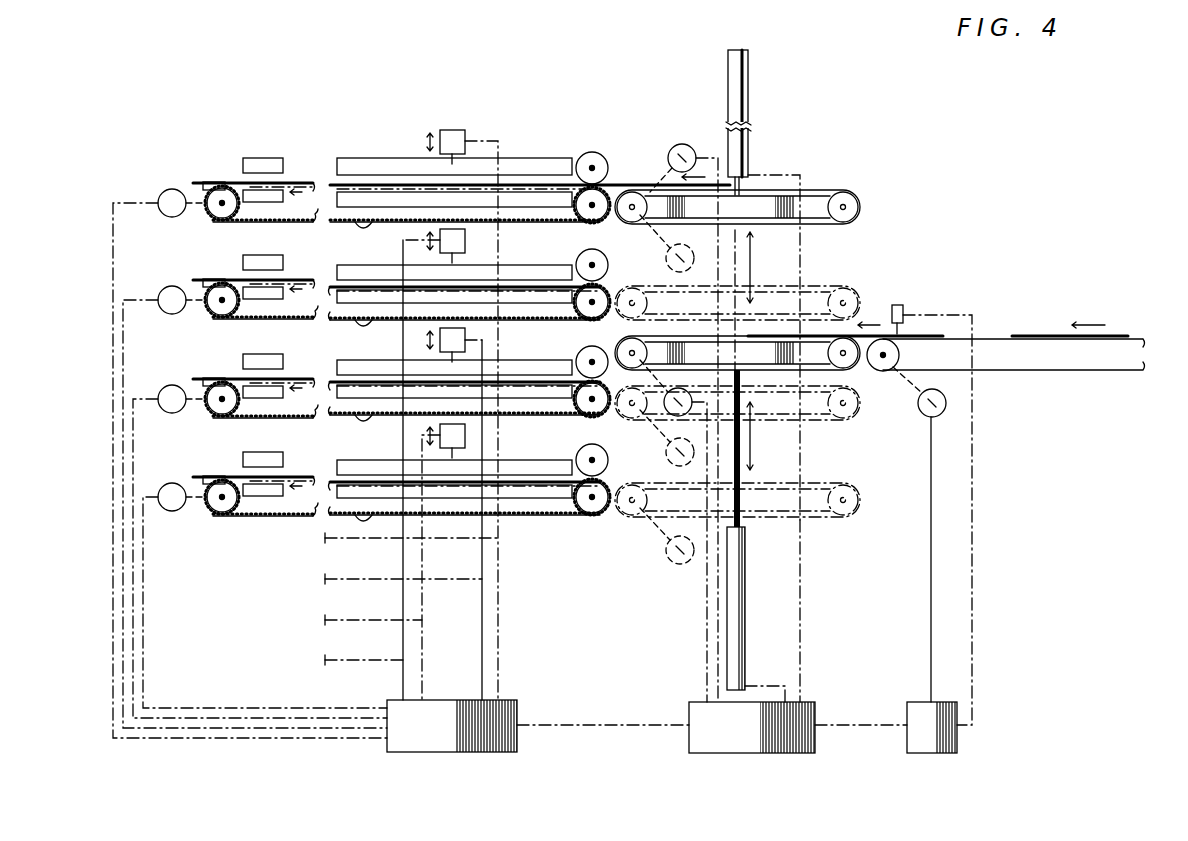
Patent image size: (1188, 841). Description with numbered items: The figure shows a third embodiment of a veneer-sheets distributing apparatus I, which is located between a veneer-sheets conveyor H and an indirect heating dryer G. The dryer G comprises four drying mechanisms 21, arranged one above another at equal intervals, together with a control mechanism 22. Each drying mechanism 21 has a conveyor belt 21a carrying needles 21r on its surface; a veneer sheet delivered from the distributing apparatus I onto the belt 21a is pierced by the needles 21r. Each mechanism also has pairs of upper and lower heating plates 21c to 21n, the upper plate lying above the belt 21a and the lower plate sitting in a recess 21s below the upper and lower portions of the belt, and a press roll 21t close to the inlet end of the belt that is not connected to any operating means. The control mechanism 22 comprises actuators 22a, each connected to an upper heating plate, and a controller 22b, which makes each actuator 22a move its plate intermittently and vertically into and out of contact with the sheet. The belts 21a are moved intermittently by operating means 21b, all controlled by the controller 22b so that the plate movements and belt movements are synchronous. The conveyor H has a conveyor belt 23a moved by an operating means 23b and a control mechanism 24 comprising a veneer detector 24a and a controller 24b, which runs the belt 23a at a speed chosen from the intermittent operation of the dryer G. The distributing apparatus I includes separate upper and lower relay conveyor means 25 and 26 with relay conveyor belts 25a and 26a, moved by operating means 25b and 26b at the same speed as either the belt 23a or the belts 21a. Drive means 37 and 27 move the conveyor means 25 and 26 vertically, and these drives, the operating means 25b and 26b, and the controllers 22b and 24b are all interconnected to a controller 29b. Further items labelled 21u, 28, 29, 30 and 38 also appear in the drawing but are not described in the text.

The drying mechanism 21 is at (215, 182).
The operating means 21b is at (165, 215).
The feed roller 21u is at (212, 183).
The heating plate 21n is at (253, 170).
The conveyor belt 21a is at (313, 225).
The needles 21r is at (220, 545).
The heating plate 21c is at (520, 192).
The recess 21s is at (545, 192).
The press roll 21t is at (592, 152).
The control mechanism 22 is at (510, 682).
The actuator 22a is at (455, 229).
The controller 22b is at (440, 713).
The conveyor belt 23a is at (1105, 372).
The operating means 23b is at (925, 417).
The control mechanism 24 is at (990, 675).
The veneer detector 24a is at (898, 305).
The controller 24b is at (960, 735).
The upper relay conveyor means 25 is at (775, 155).
The relay conveyor belt 25a is at (812, 192).
The operating means 25b is at (682, 144).
The lower relay conveyor means 26 is at (762, 425).
The relay conveyor belt 26a is at (848, 370).
The operating means 26b is at (668, 412).
The drive means 27 is at (745, 582).
The intermediate conveyor 28 is at (590, 300).
The lift control unit 29 is at (687, 683).
The controller 29b is at (803, 705).
The workpiece tray 30 is at (355, 185).
The drive means 37 is at (748, 72).
The conveyor belt 38 is at (812, 218).
The indirect heating dryer G is at (300, 600).
The veneer-sheets conveyor H is at (1052, 420).
The veneer-sheets distributing apparatus I is at (665, 733).